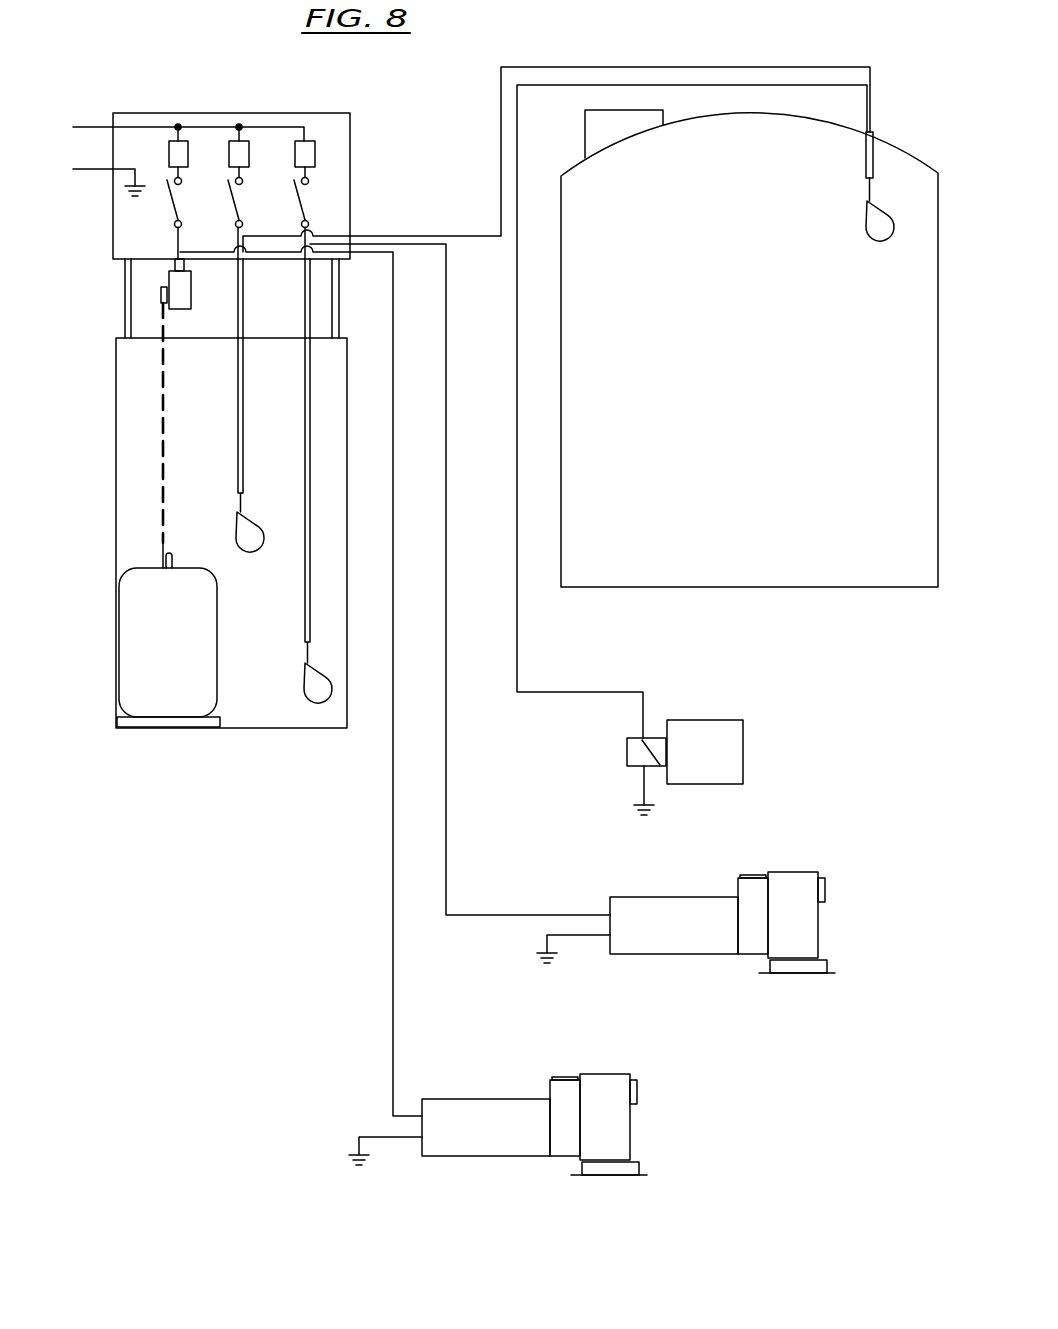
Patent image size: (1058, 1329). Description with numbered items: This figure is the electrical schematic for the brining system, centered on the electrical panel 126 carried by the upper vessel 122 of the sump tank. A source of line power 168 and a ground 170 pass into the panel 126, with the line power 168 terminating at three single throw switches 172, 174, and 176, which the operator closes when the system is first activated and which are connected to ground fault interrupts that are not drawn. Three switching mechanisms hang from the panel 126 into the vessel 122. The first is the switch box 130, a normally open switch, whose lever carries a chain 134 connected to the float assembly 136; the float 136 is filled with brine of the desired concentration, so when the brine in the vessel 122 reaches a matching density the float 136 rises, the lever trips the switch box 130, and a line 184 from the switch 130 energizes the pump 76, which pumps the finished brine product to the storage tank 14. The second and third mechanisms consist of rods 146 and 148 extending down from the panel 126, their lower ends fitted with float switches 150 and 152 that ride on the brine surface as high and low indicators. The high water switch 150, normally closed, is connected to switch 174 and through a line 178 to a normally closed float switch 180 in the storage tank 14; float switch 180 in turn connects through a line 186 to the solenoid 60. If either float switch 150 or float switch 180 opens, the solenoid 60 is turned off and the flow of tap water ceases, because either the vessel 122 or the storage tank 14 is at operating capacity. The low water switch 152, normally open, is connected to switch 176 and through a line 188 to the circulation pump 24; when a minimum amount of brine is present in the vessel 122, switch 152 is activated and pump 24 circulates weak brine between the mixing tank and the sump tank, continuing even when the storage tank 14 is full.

The storage tank 14 is at (895, 142).
The circulation pump 24 is at (818, 926).
The solenoid 60 is at (744, 735).
The pump 76 is at (630, 1132).
The upper vessel 122 is at (115, 400).
The electrical panel 126 is at (352, 175).
The switch box 130 is at (179, 310).
The chain 134 is at (162, 442).
The float assembly 136 is at (180, 651).
The rod 146 is at (244, 395).
The rod 148 is at (307, 621).
The float switch 150 is at (250, 548).
The float switch 152 is at (309, 688).
The line power 168 is at (85, 127).
The ground 170 is at (88, 171).
The switch 172 is at (186, 141).
The switch 174 is at (246, 143).
The switch 176 is at (313, 150).
The line 178 is at (412, 235).
The float switch 180 is at (868, 228).
The line 184 is at (394, 368).
The line 186 is at (517, 636).
The line 188 is at (450, 798).